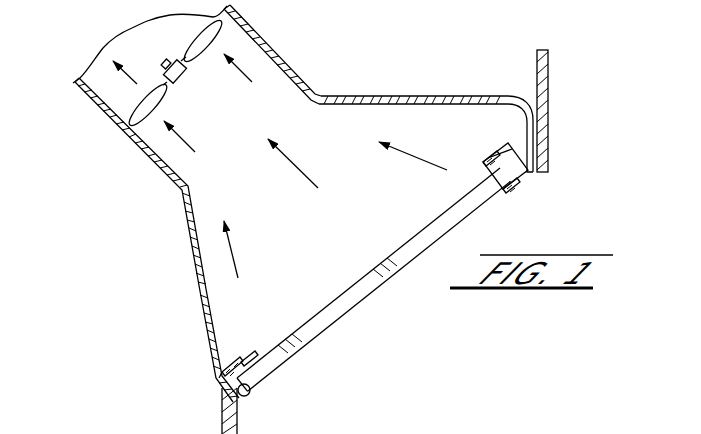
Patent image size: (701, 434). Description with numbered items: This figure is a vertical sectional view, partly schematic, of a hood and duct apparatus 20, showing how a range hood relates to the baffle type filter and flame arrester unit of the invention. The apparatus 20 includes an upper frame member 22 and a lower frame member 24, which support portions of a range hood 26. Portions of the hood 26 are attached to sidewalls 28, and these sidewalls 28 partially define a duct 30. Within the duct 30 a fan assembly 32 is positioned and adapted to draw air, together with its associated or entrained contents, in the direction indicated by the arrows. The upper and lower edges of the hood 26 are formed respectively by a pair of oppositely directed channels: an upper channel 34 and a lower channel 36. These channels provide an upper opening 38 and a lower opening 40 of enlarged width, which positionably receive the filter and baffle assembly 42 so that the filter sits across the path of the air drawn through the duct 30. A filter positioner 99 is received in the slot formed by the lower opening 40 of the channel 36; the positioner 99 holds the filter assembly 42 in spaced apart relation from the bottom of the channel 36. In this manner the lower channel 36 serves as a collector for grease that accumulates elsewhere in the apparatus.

The hood and duct apparatus 20 is at (114, 191).
The upper frame member 22 is at (541, 113).
The lower frame member 24 is at (222, 420).
The range hood 26 is at (417, 82).
The sidewalls 28 is at (258, 38).
The duct 30 is at (177, 50).
The fan assembly 32 is at (122, 100).
The upper channel 34 is at (500, 151).
The lower channel 36 is at (222, 370).
The opening 38 is at (497, 164).
The opening 40 is at (248, 357).
The filter and baffle assembly 42 is at (345, 328).
The filter positioner 99 is at (250, 391).